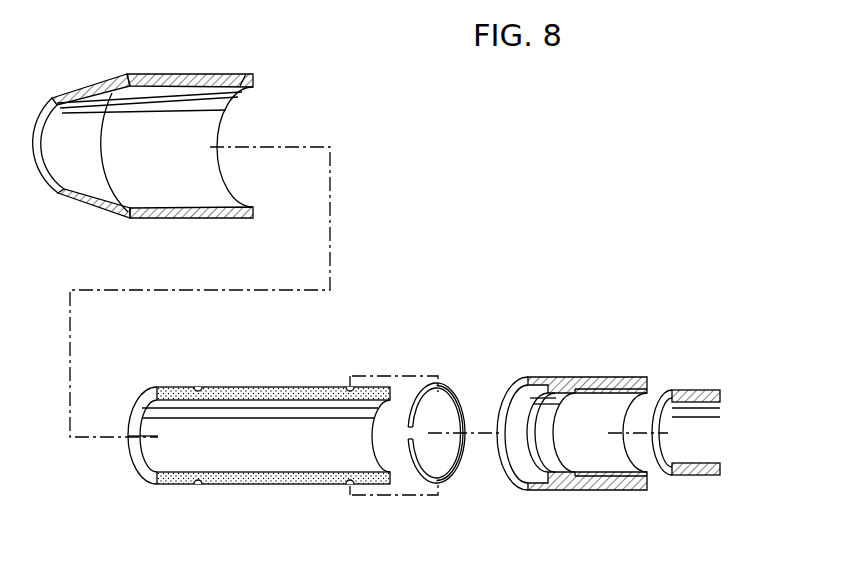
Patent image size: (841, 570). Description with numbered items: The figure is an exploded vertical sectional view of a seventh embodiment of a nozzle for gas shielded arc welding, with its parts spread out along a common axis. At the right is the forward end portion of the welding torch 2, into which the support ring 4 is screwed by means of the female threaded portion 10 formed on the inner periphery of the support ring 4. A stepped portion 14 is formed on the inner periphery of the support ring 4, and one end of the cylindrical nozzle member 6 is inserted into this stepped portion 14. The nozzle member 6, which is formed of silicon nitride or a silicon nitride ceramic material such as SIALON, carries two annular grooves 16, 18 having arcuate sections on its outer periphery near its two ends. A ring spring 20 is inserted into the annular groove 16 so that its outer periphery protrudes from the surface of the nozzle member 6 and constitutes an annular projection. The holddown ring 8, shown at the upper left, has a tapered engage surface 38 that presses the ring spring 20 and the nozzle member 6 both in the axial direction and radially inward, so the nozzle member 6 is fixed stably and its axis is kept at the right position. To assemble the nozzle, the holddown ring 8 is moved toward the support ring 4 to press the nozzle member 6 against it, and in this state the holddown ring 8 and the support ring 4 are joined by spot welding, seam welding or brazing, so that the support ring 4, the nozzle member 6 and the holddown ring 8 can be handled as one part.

The welding torch 2 is at (688, 400).
The support ring 4 is at (555, 376).
The nozzle member 6 is at (255, 387).
The holddown ring 8 is at (163, 217).
The female threaded portion 10 is at (597, 397).
The stepped portion 14 is at (528, 405).
The annular groove 16 is at (350, 488).
The annular groove 18 is at (200, 485).
The ring spring 20 is at (452, 485).
The tapered engage surface 38 is at (85, 196).